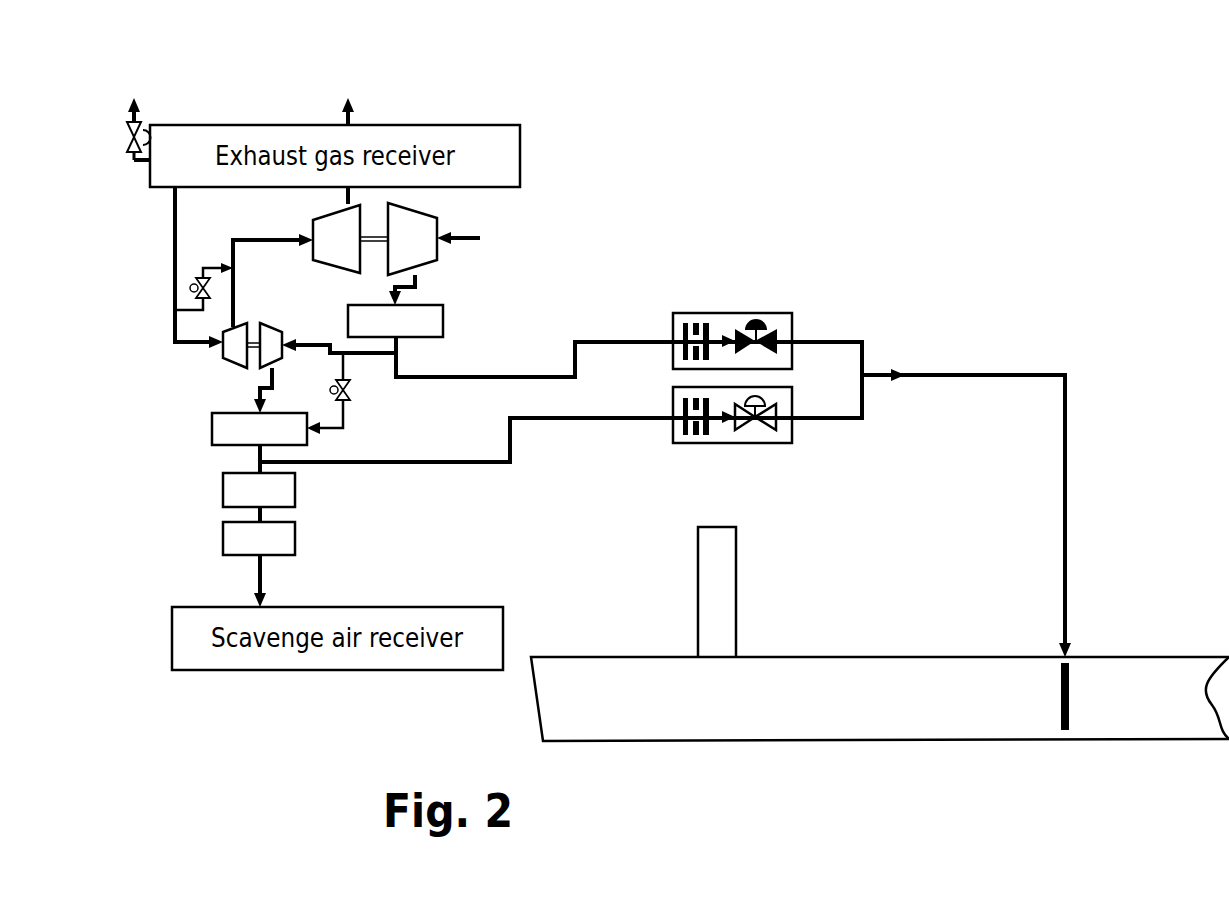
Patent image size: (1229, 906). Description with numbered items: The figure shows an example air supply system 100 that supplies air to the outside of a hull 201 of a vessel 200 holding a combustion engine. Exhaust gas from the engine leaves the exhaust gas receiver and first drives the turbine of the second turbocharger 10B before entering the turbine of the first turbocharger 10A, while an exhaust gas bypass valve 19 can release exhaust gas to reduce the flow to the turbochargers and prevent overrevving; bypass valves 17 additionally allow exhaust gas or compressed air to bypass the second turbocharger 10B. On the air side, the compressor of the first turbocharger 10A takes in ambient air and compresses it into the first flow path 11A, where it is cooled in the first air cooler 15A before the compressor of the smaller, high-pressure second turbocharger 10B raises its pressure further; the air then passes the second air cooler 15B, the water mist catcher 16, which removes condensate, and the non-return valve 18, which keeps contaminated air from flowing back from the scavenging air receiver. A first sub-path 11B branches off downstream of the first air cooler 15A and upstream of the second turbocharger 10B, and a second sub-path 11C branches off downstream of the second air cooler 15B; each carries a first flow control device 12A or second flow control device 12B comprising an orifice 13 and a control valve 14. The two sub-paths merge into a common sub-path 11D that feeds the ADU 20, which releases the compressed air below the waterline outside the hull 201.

The air supply system 100 is at (1090, 115).
The exhaust gas bypass valve 19 is at (130, 156).
The bypass valve 17 is at (194, 288).
The first turbocharger 10A is at (313, 225).
The second turbocharger 10B is at (223, 355).
The first flow path 11A is at (418, 282).
The first sub-path 11B is at (510, 375).
The second sub-path 11C is at (413, 464).
The common sub-path 11D is at (980, 373).
The first air cooler 15A is at (395, 321).
The second air cooler 15B is at (259, 429).
The water mist catcher 16 is at (259, 490).
The non-return valve 18 is at (259, 538).
The first flow control device 12A is at (755, 313).
The second flow control device 12B is at (745, 443).
The orifice 13 is at (677, 353).
The control valve 14 is at (777, 338).
The ADU 20 is at (1067, 737).
The vessel 200 is at (722, 819).
The hull 201 is at (893, 718).